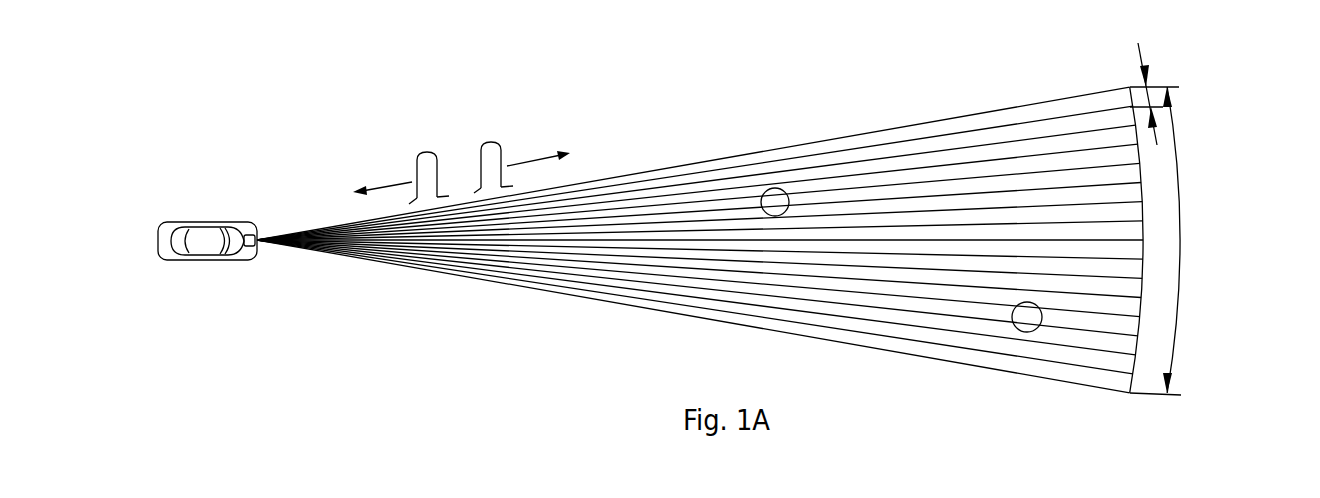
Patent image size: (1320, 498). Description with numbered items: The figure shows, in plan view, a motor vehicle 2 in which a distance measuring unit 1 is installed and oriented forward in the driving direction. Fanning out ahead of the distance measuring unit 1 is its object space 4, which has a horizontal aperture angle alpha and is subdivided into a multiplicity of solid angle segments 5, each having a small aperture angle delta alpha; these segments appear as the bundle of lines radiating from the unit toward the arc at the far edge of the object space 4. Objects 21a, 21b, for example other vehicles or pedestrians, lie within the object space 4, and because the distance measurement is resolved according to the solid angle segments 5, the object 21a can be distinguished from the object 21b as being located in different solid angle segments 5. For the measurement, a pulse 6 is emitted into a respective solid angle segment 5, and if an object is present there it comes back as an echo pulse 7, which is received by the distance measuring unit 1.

The distance measuring unit 1 is at (254, 230).
The motor vehicle 2 is at (164, 206).
The object space 4 is at (619, 165).
The solid angle segments 5 is at (992, 152).
The pulse 6 is at (491, 160).
The echo pulse 7 is at (426, 165).
The object 21a is at (772, 198).
The object 21b is at (1027, 318).